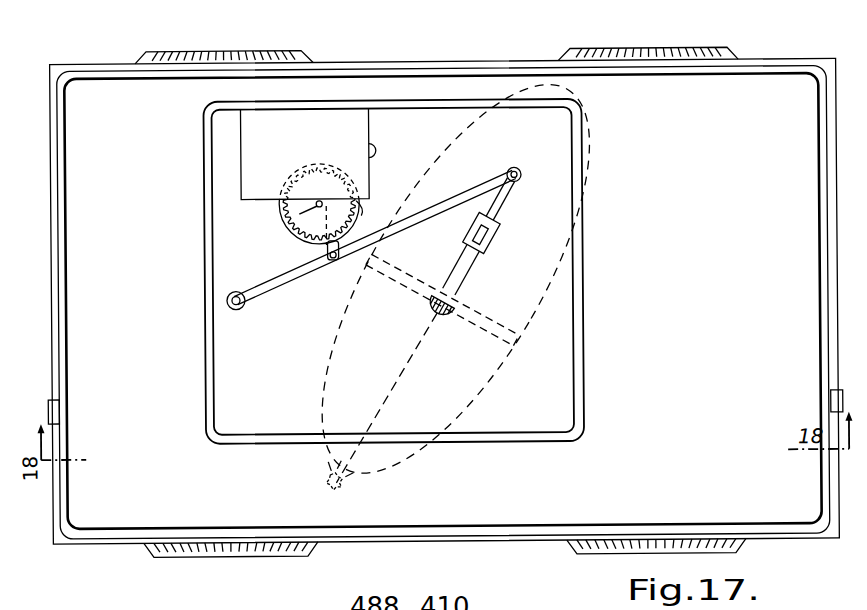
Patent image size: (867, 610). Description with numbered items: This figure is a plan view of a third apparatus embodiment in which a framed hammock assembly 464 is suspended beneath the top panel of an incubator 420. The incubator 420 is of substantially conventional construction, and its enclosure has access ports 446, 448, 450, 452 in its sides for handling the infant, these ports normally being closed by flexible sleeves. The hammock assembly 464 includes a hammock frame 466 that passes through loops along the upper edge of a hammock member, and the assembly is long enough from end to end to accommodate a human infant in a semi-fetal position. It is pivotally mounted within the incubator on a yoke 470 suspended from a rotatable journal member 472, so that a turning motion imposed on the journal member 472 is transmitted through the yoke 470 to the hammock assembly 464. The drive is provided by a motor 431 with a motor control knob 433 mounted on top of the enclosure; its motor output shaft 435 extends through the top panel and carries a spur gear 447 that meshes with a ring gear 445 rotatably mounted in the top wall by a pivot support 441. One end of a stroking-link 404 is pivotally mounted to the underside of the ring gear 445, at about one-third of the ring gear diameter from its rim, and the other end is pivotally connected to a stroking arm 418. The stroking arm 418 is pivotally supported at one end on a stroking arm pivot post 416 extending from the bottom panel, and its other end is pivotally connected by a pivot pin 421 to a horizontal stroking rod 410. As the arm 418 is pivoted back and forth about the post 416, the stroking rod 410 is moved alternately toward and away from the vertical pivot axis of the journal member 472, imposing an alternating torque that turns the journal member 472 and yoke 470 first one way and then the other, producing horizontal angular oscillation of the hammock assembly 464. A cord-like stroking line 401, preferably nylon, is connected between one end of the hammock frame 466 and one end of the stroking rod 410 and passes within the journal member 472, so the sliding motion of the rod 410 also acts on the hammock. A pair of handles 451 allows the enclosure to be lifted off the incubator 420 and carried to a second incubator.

The incubator 420 is at (485, 59).
The access port 446 is at (257, 56).
The access port 448 is at (712, 49).
The access port 450 is at (269, 551).
The access port 452 is at (590, 549).
The handles 451 is at (206, 236).
The motor 431 is at (371, 113).
The motor control knob 433 is at (378, 156).
The motor output shaft 435 is at (303, 175).
The spur gear 447 is at (327, 172).
The ring gear 445 is at (357, 212).
The pivot support 441 is at (300, 213).
The stroking arm 418 is at (279, 284).
The stroking arm pivot post 416 is at (237, 309).
The pivot pin 421 is at (523, 167).
The stroking-link 404 is at (327, 252).
The stroking rod 410 is at (497, 217).
The journal member 472 is at (453, 300).
The yoke 470 is at (470, 320).
The stroking line 401 is at (406, 364).
The hammock frame 466 is at (397, 462).
The hammock assembly 464 is at (579, 238).